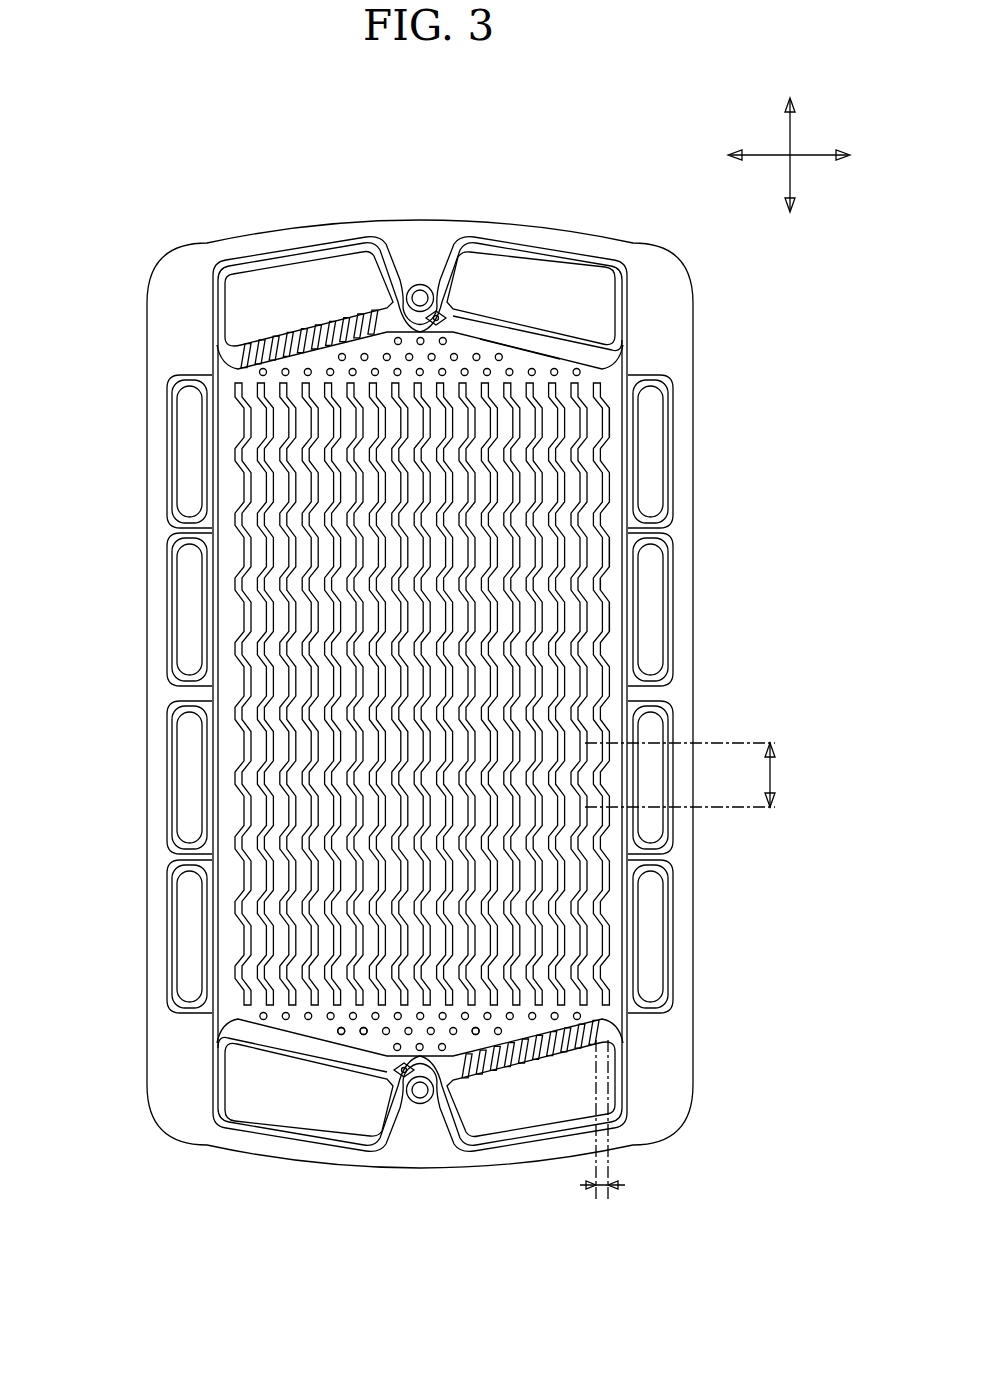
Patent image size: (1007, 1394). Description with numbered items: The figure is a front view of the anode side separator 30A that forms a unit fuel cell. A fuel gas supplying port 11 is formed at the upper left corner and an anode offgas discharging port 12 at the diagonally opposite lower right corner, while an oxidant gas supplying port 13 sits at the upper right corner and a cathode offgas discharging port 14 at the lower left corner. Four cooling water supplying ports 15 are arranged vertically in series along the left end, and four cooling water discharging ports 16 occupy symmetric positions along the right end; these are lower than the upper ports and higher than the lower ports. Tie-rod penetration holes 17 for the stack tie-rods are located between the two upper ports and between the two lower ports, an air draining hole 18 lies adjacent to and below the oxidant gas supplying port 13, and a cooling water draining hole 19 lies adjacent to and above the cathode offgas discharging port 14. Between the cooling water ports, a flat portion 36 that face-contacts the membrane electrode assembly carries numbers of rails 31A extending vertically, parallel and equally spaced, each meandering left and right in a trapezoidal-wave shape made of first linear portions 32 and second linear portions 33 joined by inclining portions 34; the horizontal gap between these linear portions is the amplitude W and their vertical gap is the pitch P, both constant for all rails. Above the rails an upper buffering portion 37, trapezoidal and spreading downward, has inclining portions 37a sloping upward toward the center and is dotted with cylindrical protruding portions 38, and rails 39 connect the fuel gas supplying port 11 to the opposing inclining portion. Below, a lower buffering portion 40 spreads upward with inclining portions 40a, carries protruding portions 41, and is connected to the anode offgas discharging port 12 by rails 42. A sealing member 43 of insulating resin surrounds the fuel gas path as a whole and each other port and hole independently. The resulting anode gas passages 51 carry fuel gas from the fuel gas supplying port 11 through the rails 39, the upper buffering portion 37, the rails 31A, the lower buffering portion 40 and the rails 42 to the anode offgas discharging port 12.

The anode side separator 30A is at (170, 188).
The fuel gas supplying port 11 is at (318, 268).
The anode offgas discharging port 12 is at (520, 1125).
The oxidant gas supplying port 13 is at (580, 272).
The cathode offgas discharging port 14 is at (262, 1112).
The cooling water supplying ports 15 is at (186, 440).
The cooling water discharging ports 16 is at (657, 462).
The tie-rod penetration holes 17 is at (420, 285).
The air draining hole 18 is at (437, 315).
The cooling water draining hole 19 is at (403, 1075).
The rails 31A is at (604, 510).
The first linear portions 32 is at (604, 555).
The second linear portions 33 is at (604, 607).
The inclining portions 34 is at (604, 583).
The flat portion 36 is at (228, 485).
The upper buffering portion 37 is at (527, 352).
The inclining portions 37a is at (562, 362).
The protruding portions 38 is at (480, 342).
The rails 39 is at (270, 340).
The lower buffering portion 40 is at (320, 1022).
The inclining portions 40a is at (340, 1036).
The protruding portions 41 is at (360, 1036).
The rails 42 is at (460, 1062).
The sealing member 43 is at (640, 1048).
The anode gas passages 51 is at (607, 412).
The pitch P is at (690, 775).
The amplitude W is at (602, 1138).